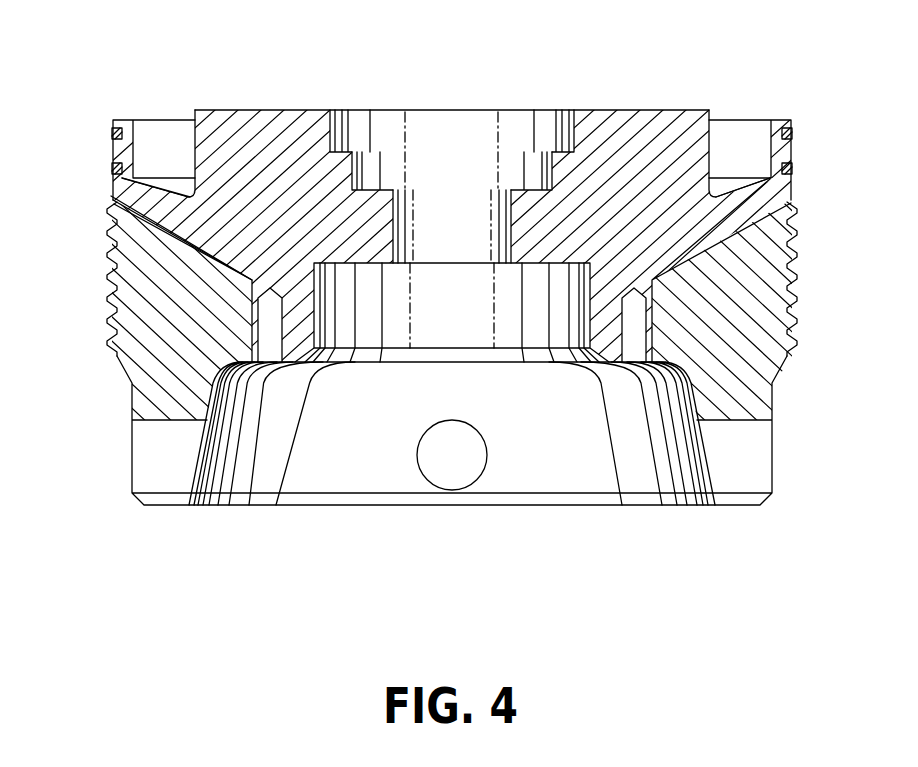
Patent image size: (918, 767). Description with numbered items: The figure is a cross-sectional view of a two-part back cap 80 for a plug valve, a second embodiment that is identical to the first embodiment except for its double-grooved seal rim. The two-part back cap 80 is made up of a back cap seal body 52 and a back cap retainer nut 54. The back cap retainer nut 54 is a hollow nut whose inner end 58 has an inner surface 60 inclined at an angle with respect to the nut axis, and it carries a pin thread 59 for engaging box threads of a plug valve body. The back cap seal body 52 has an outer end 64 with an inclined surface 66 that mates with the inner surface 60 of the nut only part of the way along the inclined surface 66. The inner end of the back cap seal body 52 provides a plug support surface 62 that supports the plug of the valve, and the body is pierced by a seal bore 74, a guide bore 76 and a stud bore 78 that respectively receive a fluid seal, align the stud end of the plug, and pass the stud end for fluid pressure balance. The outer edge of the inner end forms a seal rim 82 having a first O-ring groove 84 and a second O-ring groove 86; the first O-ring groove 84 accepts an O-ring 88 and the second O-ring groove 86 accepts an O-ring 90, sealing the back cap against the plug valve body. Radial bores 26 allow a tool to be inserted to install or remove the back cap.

The radial bores 26 is at (132, 457).
The back cap seal body 52 is at (600, 100).
The back cap retainer nut 54 is at (578, 512).
The inner end 58 is at (728, 232).
The pin thread 59 is at (110, 340).
The inner surface 60 is at (743, 270).
The plug support surface 62 is at (217, 109).
The outer end 64 is at (170, 252).
The inclined surface 66 is at (113, 193).
The seal bore 74 is at (362, 118).
The guide bore 76 is at (417, 157).
The stud bore 78 is at (458, 202).
The two-part back cap 80 is at (302, 528).
The seal rim 82 is at (121, 131).
The first O-ring groove 84 is at (784, 130).
The second O-ring groove 86 is at (782, 165).
The O-ring 88 is at (114, 131).
The O-ring 90 is at (110, 168).